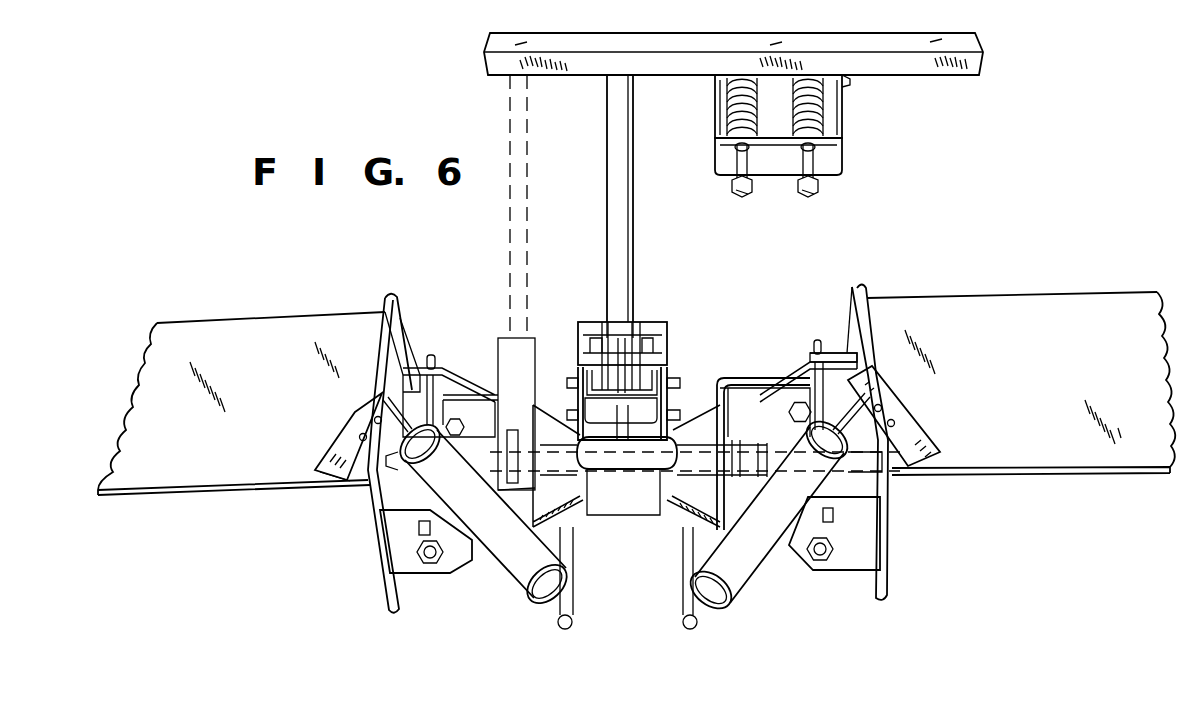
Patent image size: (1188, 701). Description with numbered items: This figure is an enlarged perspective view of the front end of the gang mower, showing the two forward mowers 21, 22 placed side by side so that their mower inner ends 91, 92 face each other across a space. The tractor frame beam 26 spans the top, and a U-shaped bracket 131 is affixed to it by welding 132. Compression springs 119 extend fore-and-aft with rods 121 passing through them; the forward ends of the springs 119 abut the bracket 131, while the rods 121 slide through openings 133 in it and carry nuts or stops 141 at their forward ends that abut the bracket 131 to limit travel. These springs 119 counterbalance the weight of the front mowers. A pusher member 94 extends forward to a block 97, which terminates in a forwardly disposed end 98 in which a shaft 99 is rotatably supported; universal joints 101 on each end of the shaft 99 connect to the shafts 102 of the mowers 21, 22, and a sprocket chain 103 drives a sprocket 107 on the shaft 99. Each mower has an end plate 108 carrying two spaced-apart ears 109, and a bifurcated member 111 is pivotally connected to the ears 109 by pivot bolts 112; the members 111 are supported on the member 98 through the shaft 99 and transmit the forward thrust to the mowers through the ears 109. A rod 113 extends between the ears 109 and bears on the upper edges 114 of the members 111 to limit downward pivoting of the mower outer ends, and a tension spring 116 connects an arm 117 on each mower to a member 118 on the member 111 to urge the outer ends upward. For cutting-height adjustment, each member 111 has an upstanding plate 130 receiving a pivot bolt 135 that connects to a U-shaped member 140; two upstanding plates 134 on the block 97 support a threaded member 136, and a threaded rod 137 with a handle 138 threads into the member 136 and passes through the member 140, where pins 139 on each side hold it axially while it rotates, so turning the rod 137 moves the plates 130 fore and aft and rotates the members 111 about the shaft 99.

The forward mower 21 is at (1003, 466).
The forward mower 22 is at (243, 481).
The beam 26 is at (935, 75).
The mower inner end 91 is at (388, 297).
The mower inner end 92 is at (862, 286).
The pusher member 94 is at (634, 209).
The block 97 is at (667, 345).
The forwardly disposed end 98 is at (655, 500).
The shaft 99 is at (740, 438).
The universal joint 101 is at (470, 392).
The mower shaft 102 is at (405, 462).
The sprocket chain 103 is at (522, 252).
The sprocket 107 is at (495, 480).
The end plate 108 is at (403, 343).
The ear 109 is at (858, 348).
The bifurcated member 111 is at (437, 360).
The pivot bolt 112 is at (415, 565).
The rod 113 is at (435, 368).
The upper edge 114 is at (800, 385).
The tension spring 116 is at (540, 608).
The arm 117 is at (356, 425).
The member 118 is at (683, 625).
The compression spring 119 is at (800, 90).
The rod 121 is at (805, 172).
The upstanding plate 130 is at (580, 365).
The U-shaped bracket 131 is at (845, 115).
The welding 132 is at (850, 82).
The opening 133 is at (845, 150).
The upstanding plate 134 is at (606, 322).
The pivot bolt 135 is at (580, 382).
The threaded member 136 is at (640, 322).
The threaded rod 137 is at (594, 523).
The handle 138 is at (665, 523).
The pin 139 is at (625, 440).
The U-shaped member 140 is at (655, 338).
The stop 141 is at (812, 197).